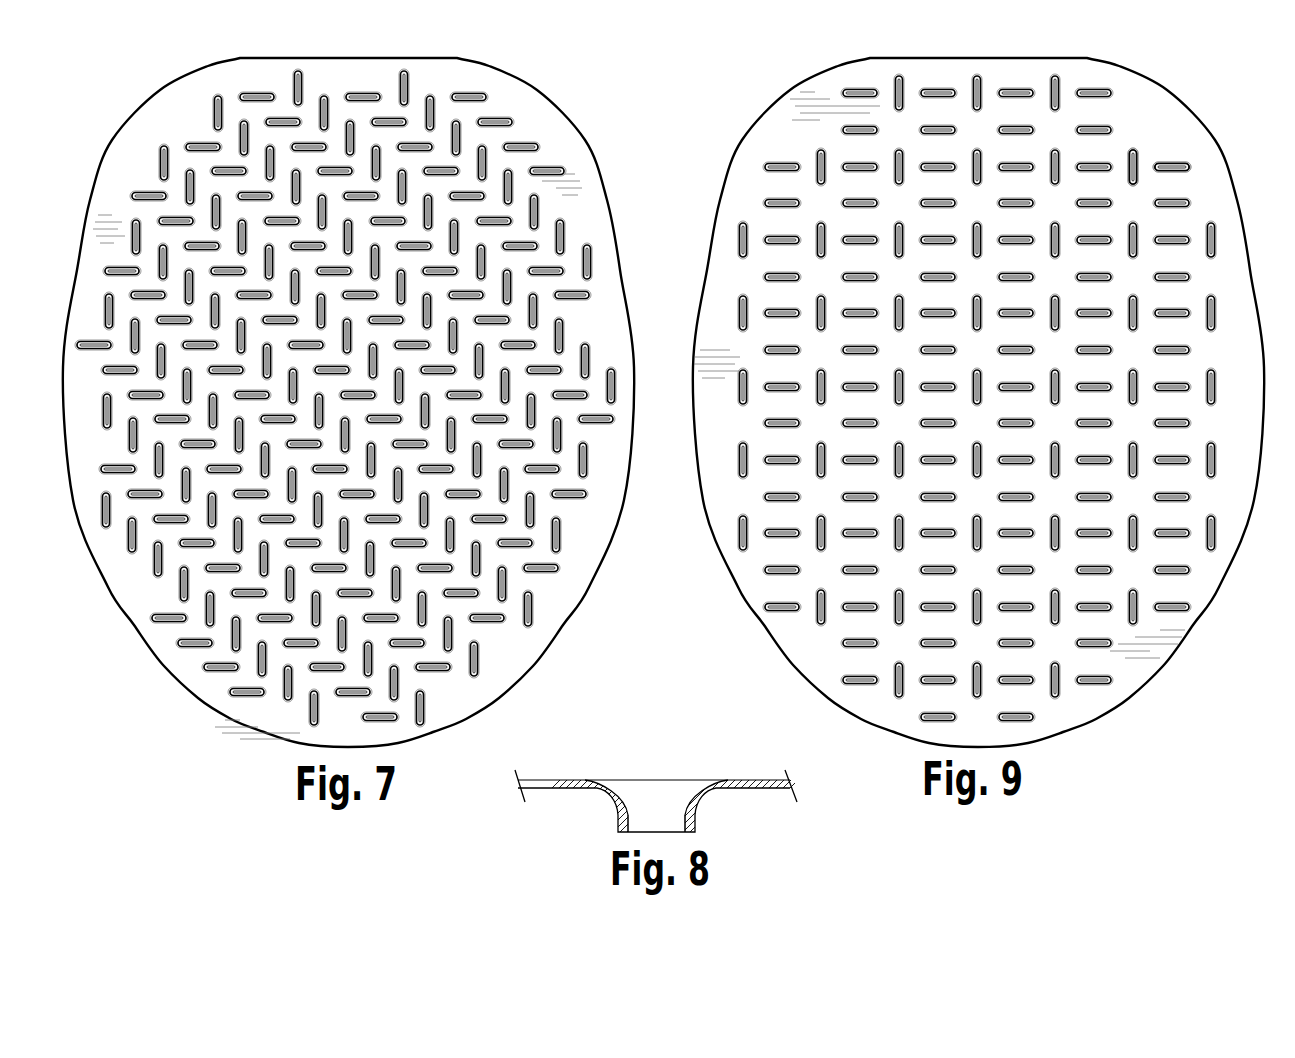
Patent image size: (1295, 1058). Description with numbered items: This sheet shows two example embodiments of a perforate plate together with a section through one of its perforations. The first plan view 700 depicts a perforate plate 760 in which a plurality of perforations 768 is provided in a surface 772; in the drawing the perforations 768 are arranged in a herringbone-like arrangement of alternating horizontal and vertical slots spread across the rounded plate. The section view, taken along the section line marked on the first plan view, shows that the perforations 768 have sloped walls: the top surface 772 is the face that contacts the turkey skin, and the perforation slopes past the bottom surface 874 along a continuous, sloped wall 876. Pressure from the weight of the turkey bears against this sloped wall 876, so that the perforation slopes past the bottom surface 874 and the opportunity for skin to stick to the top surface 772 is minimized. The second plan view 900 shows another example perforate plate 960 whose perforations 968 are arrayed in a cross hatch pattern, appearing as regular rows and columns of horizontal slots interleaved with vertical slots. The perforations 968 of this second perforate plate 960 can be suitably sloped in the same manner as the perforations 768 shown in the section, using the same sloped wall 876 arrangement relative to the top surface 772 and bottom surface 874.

In FIG. 7, the plan view 700 is at (364, 387).
In FIG. 7, the perforate plate 760 is at (619, 250).
In FIG. 7, the perforations 768 is at (500, 121).
In FIG. 7, the surface 772 is at (583, 214).
In FIG. 8, the surface 772 is at (570, 779).
In FIG. 8, the bottom surface 874 is at (762, 792).
In FIG. 8, the sloped wall 876 is at (683, 788).
In FIG. 9, the plan view 900 is at (985, 388).
In FIG. 9, the perforate plate 960 is at (1248, 247).
In FIG. 9, the perforations 968 is at (1138, 158).